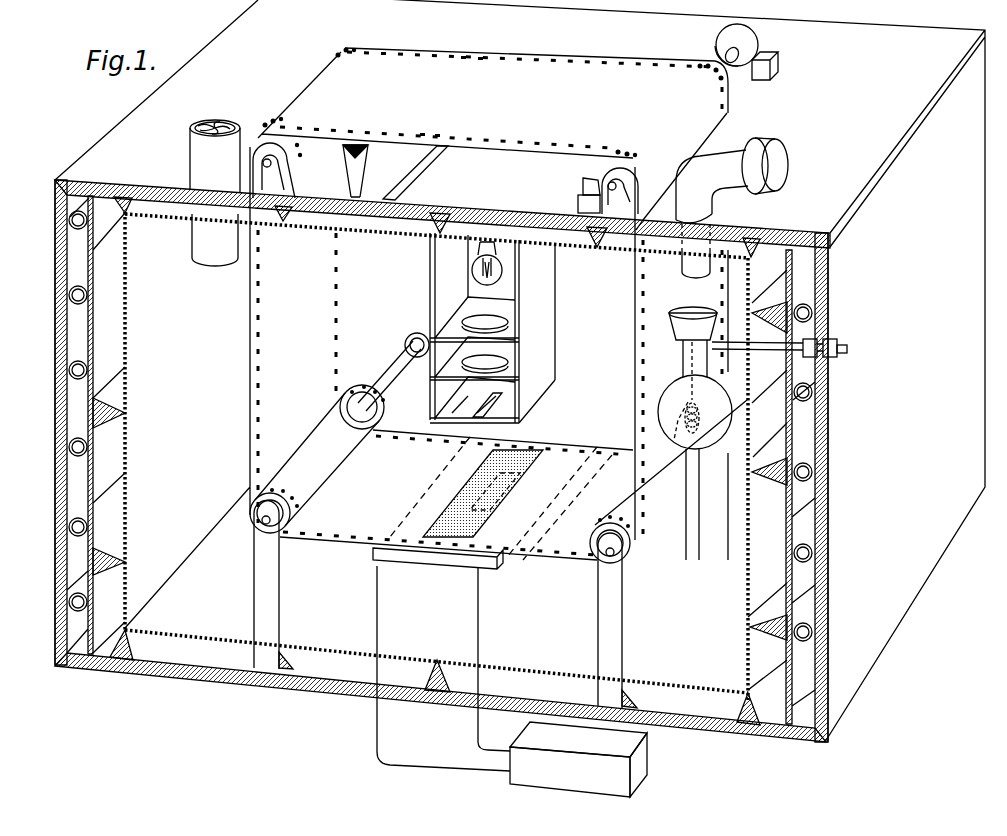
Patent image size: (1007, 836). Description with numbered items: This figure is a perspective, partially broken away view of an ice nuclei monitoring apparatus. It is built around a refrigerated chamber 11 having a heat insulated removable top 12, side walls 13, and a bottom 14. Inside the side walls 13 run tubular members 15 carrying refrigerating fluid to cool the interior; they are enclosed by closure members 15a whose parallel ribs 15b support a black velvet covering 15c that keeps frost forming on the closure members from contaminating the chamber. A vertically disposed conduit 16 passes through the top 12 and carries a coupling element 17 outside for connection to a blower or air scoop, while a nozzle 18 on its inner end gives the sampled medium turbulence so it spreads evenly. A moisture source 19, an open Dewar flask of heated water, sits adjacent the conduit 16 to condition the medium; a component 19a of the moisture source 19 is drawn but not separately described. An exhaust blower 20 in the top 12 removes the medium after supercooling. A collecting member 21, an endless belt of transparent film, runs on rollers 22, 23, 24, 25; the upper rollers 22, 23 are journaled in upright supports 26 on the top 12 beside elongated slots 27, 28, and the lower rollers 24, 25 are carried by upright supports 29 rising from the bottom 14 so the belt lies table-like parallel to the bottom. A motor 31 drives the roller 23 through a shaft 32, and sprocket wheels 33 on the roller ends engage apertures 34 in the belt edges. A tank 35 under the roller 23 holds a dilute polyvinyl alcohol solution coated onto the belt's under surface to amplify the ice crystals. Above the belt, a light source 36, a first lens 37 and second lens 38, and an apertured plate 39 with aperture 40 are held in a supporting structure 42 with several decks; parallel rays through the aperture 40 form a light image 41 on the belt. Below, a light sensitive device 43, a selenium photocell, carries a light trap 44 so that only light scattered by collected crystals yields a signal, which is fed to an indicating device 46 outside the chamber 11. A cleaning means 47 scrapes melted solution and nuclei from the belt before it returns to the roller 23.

The refrigerated chamber 11 is at (70, 164).
The removable top 12 is at (118, 136).
The side walls 13 is at (56, 400).
The bottom 14 is at (190, 672).
The tubular members 15 is at (80, 353).
The closure members 15a is at (92, 505).
The parallel ribs 15b is at (103, 421).
The black velvet covering 15c is at (126, 493).
The conduit 16 is at (717, 203).
The coupling element 17 is at (770, 139).
The nozzle 18 is at (690, 275).
The moisture source 19 is at (682, 372).
The sensing bulb 19a is at (683, 432).
The exhaust blower 20 is at (217, 118).
The collecting member 21 is at (542, 60).
The roller 22 is at (292, 166).
The roller 23 is at (600, 168).
The roller 24 is at (632, 560).
The roller 25 is at (256, 523).
The upright supports 26 is at (285, 184).
The elongated slot 27 is at (647, 228).
The elongated slot 28 is at (248, 189).
The upright supports 29 is at (280, 592).
The motor 31 is at (760, 34).
The shaft 32 is at (726, 56).
The sprocket wheel 33 is at (342, 56).
The apertures 34 is at (438, 135).
The tank 35 is at (586, 186).
The light source 36 is at (502, 275).
The first lens 37 is at (508, 326).
The second lens 38 is at (508, 363).
The apertured plate 39 is at (452, 413).
The aperture 40 is at (488, 409).
The light image 41 is at (497, 492).
The supporting structure 42 is at (430, 300).
The light sensitive device 43 is at (450, 566).
The light trap 44 is at (468, 538).
The indicating device 46 is at (636, 750).
The cleaning means 47 is at (348, 155).